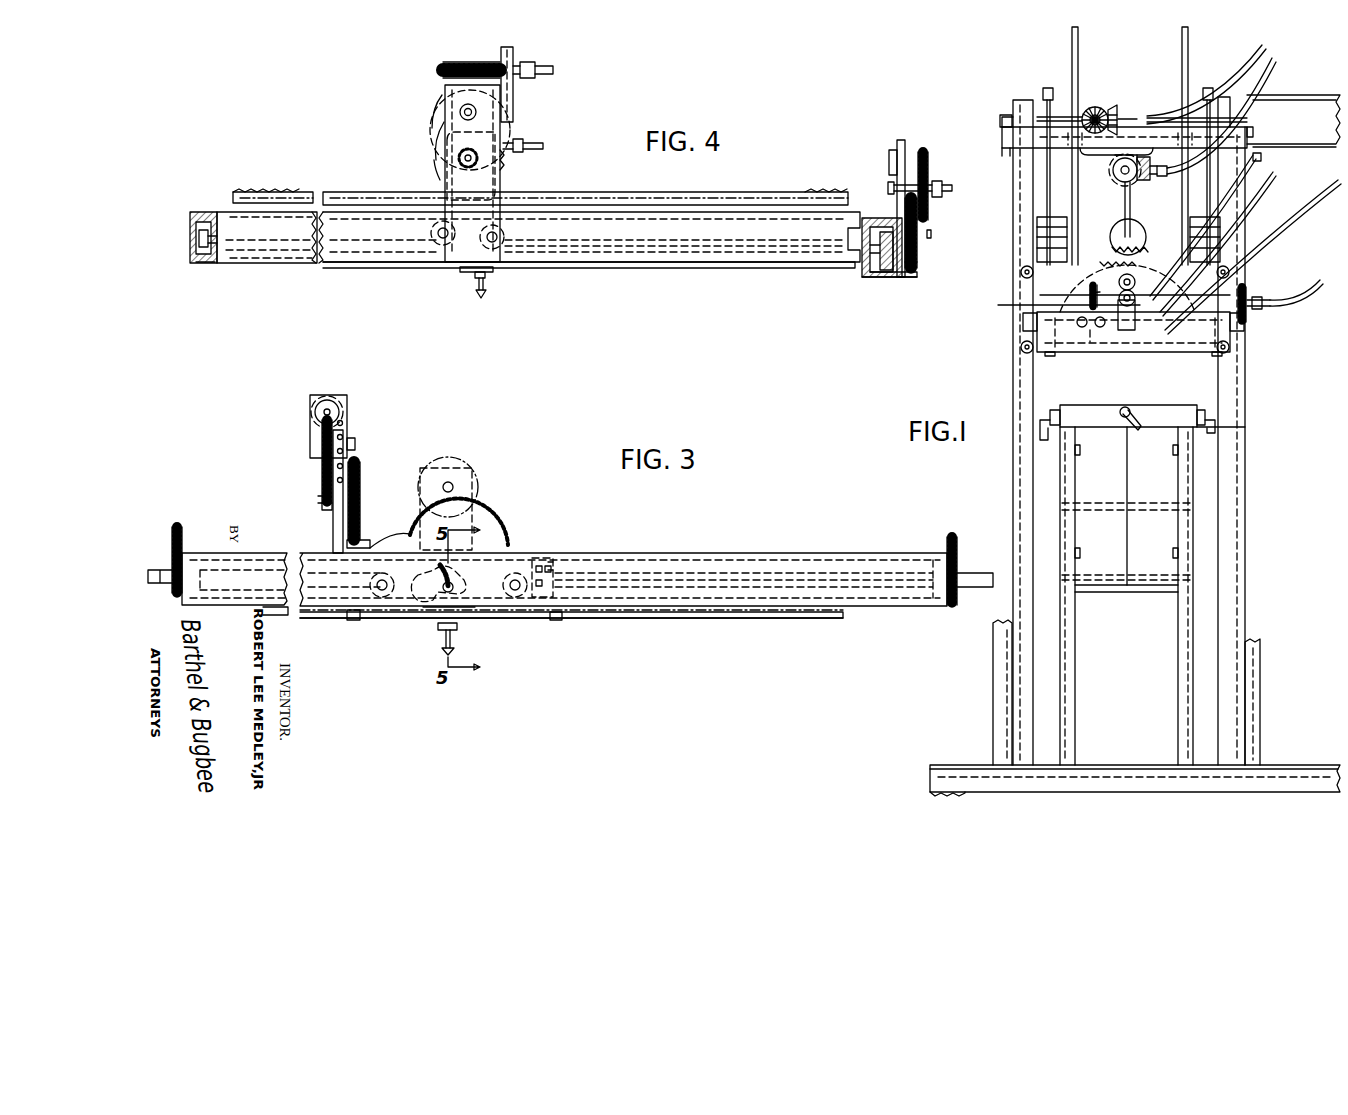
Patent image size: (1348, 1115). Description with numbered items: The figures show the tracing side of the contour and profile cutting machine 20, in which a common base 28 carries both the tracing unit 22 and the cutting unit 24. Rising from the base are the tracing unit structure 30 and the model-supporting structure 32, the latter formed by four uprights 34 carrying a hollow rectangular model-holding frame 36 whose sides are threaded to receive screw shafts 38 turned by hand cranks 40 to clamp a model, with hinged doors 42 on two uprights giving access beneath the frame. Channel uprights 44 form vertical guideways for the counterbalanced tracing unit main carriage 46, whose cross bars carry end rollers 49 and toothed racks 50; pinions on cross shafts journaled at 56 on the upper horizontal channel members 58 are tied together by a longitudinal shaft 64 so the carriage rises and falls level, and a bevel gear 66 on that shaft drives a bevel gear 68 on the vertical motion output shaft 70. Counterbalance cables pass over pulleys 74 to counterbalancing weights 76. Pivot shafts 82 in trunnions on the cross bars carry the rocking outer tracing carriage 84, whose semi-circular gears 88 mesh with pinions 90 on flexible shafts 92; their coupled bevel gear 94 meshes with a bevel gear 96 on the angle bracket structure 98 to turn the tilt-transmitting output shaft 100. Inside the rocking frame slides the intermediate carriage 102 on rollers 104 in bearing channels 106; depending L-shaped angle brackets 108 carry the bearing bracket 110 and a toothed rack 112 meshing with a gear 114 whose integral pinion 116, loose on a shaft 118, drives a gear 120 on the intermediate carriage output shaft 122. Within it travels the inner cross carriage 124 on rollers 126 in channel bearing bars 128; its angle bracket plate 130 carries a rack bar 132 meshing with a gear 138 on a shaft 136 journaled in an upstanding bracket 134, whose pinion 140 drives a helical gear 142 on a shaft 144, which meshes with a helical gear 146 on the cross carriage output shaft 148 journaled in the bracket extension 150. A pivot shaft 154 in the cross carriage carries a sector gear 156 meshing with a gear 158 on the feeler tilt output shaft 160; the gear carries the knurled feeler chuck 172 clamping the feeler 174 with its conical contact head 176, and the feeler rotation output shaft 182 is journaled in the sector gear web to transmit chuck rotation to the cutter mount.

In FIG. 1, the machine 20 is at (1239, 64).
In FIG. 1, the tracing unit 22 is at (1003, 137).
In FIG. 1, the cutting unit 24 is at (1323, 90).
In FIG. 1, the common base 28 is at (922, 770).
In FIG. 1, the tracing unit structure 30 is at (1009, 452).
In FIG. 1, the model-supporting structure 32 is at (1238, 429).
In FIG. 1, the uprights 34 is at (1073, 722).
In FIG. 1, the model-holding frame 36 is at (1122, 402).
In FIG. 1, the screw shafts 38 is at (1053, 422).
In FIG. 1, the hand cranks 40 is at (1044, 442).
In FIG. 1, the hinged doors 42 is at (1136, 585).
In FIG. 1, the channel uprights 44 is at (1013, 493).
In FIG. 1, the tracing unit main carriage 46 is at (1167, 353).
In FIG. 1, the end rollers 49 is at (1020, 273).
In FIG. 1, the toothed racks 50 is at (1078, 60).
In FIG. 1, the journals 56 is at (1006, 114).
In FIG. 1, the upper horizontal channel members 58 is at (1011, 151).
In FIG. 1, the longitudinal shaft 64 is at (1095, 106).
In FIG. 1, the bevel gear 66 is at (1100, 114).
In FIG. 1, the bevel gear 68 is at (1118, 108).
In FIG. 1, the vertical motion output shaft 70 is at (1149, 116).
In FIG. 1, the pulleys 74 is at (1048, 88).
In FIG. 1, the counterbalancing weights 76 is at (1054, 210).
In FIG. 3, the pivot shafts 82 is at (161, 567).
In FIG. 4, the outer tracing carriage 84 is at (192, 218).
In FIG. 3, the outer tracing carriage 84 is at (700, 559).
In FIG. 3, the semi-circular gears 88 is at (181, 535).
In FIG. 1, the semi-circular gears 88 is at (1115, 252).
In FIG. 1, the pinions 90 is at (1142, 232).
In FIG. 1, the flexible shafts 92 is at (1126, 210).
In FIG. 1, the bevel gear 94 is at (1120, 178).
In FIG. 1, the bevel gear 96 is at (1142, 182).
In FIG. 1, the angle bracket structure 98 is at (1120, 160).
In FIG. 1, the outer carriage tilt-transmitting output shaft 100 is at (1258, 53).
In FIG. 3, the intermediate carriage 102 is at (561, 542).
In FIG. 4, the rollers 104 is at (198, 241).
In FIG. 3, the rollers 104 is at (510, 617).
In FIG. 4, the bearing channels 106 is at (205, 263).
In FIG. 4, the L-shaped angle brackets 108 is at (887, 277).
In FIG. 3, the L-shaped angle brackets 108 is at (352, 620).
In FIG. 4, the bearing bracket 110 is at (898, 140).
In FIG. 3, the bearing bracket 110 is at (461, 570).
In FIG. 4, the toothed rack 112 is at (915, 278).
In FIG. 3, the toothed rack 112 is at (425, 610).
In FIG. 1, the toothed rack 112 is at (1242, 333).
In FIG. 4, the gear 114 is at (918, 260).
In FIG. 3, the gear 114 is at (498, 584).
In FIG. 4, the pinion 116 is at (922, 220).
In FIG. 4, the shaft 118 is at (931, 234).
In FIG. 4, the gear 120 is at (925, 155).
In FIG. 4, the intermediate carriage output shaft 122 is at (945, 180).
In FIG. 1, the intermediate carriage output shaft 122 is at (1290, 296).
In FIG. 4, the inner cross carriage 124 is at (505, 232).
In FIG. 1, the inner cross carriage 124 is at (1068, 328).
In FIG. 4, the rollers 126 is at (436, 229).
In FIG. 3, the rollers 126 is at (563, 556).
In FIG. 4, the channel bearing bars 128 is at (635, 245).
In FIG. 3, the channel bearing bars 128 is at (555, 589).
In FIG. 3, the angle bracket plate 130 is at (386, 546).
In FIG. 4, the rack bar 132 is at (340, 192).
In FIG. 3, the rack bar 132 is at (358, 535).
In FIG. 4, the upstanding bracket 134 is at (442, 101).
In FIG. 3, the upstanding bracket 134 is at (333, 535).
In FIG. 4, the shaft 136 is at (505, 164).
In FIG. 3, the shaft 136 is at (321, 503).
In FIG. 4, the gear 138 is at (440, 170).
In FIG. 3, the gear 138 is at (360, 488).
In FIG. 4, the pinion 140 is at (460, 158).
In FIG. 3, the pinion 140 is at (320, 490).
In FIG. 4, the helical gear 142 is at (438, 91).
In FIG. 3, the helical gear 142 is at (318, 465).
In FIG. 4, the shaft 144 is at (462, 114).
In FIG. 3, the shaft 144 is at (356, 444).
In FIG. 4, the helical gear 146 is at (482, 62).
In FIG. 3, the helical gear 146 is at (331, 398).
In FIG. 4, the cross carriage output shaft 148 is at (520, 56).
In FIG. 1, the cross carriage output shaft 148 is at (1286, 178).
In FIG. 4, the bracket extension 150 is at (513, 94).
In FIG. 3, the pivot shaft 154 is at (435, 573).
In FIG. 3, the sector gear 156 is at (480, 526).
In FIG. 3, the gear 158 is at (478, 478).
In FIG. 4, the feeler tilt output shaft 160 is at (512, 140).
In FIG. 3, the feeler tilt output shaft 160 is at (448, 483).
In FIG. 1, the feeler tilt output shaft 160 is at (1095, 286).
In FIG. 4, the feeler chuck 172 is at (472, 277).
In FIG. 3, the feeler chuck 172 is at (441, 630).
In FIG. 4, the feeler 174 is at (488, 286).
In FIG. 3, the feeler 174 is at (456, 637).
In FIG. 4, the contact head 176 is at (486, 298).
In FIG. 3, the contact head 176 is at (442, 651).
In FIG. 3, the feeler rotation output shaft 182 is at (387, 575).
In FIG. 1, the feeler rotation output shaft 182 is at (1282, 225).